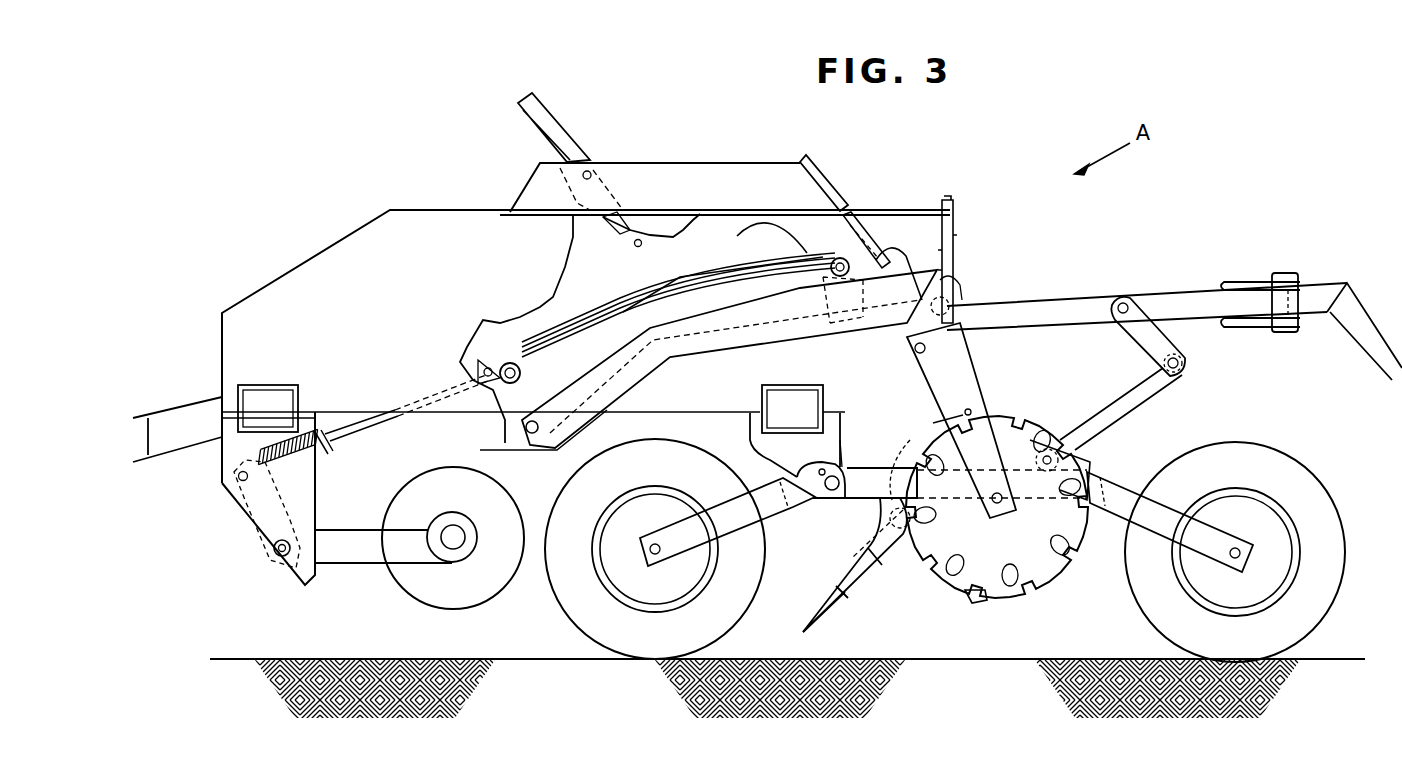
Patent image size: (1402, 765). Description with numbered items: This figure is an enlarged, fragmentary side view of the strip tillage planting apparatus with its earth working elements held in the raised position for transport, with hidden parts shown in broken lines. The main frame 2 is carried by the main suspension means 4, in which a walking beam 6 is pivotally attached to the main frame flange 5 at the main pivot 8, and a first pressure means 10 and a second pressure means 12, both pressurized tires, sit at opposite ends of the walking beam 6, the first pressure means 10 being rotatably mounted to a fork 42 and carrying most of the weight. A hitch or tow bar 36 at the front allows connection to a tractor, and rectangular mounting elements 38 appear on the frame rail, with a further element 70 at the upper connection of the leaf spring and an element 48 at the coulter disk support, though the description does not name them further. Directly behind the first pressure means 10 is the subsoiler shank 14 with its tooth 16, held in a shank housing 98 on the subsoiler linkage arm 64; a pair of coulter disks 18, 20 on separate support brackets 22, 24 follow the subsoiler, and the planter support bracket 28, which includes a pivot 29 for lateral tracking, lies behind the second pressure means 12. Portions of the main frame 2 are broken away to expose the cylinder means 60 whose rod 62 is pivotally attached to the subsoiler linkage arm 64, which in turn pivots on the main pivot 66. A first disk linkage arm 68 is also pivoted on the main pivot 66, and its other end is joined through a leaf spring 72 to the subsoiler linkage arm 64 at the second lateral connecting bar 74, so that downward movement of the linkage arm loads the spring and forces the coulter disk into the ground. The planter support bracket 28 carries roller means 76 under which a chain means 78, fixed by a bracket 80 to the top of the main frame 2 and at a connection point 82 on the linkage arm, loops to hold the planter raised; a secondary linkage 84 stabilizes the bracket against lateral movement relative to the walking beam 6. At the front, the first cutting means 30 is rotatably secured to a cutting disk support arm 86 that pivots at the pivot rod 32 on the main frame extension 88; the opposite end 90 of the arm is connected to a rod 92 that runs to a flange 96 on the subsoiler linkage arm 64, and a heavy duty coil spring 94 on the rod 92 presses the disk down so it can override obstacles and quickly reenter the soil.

The main frame 2 is at (370, 282).
The main suspension or carrying means 4 is at (855, 470).
The main frame flange 5 is at (790, 460).
The walking beam 6 is at (858, 493).
The main pivot 8 is at (818, 502).
The first pressure means 10 is at (582, 618).
The second pressure means 12 is at (1318, 603).
The subsoiler shank 14 is at (897, 425).
The tooth 16 is at (830, 592).
The coulter disk 18 is at (985, 552).
The coulter disk 20 is at (925, 600).
The support bracket 22 is at (965, 372).
The support bracket 24 is at (850, 350).
The planter support bracket 28 is at (760, 317).
The pivot 29 is at (1275, 282).
The first cutting means 30 is at (455, 468).
The pivot rod 32 is at (280, 560).
The hitch or tow bar 36 is at (173, 420).
The mounting box 38 is at (268, 385).
The fork 42 is at (730, 520).
The disc arm 48 is at (1020, 410).
The cylinder means 60 is at (570, 140).
The rod 62 is at (640, 222).
The subsoiler linkage arm 64 is at (648, 268).
The main pivot 66 is at (532, 437).
The first disk linkage arm 68 is at (708, 313).
The spring pivot 70 is at (841, 258).
The leaf spring 72 is at (737, 313).
The second lateral connecting bar 74 is at (510, 362).
The roller means 76 is at (940, 300).
The chain means 78 is at (947, 277).
The bracket 80 is at (953, 217).
The connection point 82 is at (870, 210).
The secondary linkage 84 is at (1185, 362).
The cutting disk support arm 86 is at (330, 540).
The main frame extension 88 is at (312, 500).
The opposite end of support arm 90 is at (250, 500).
The rod 92 is at (370, 413).
The heavy duty coil spring 94 is at (328, 456).
The flange 96 is at (490, 368).
The shank housing 98 is at (808, 230).